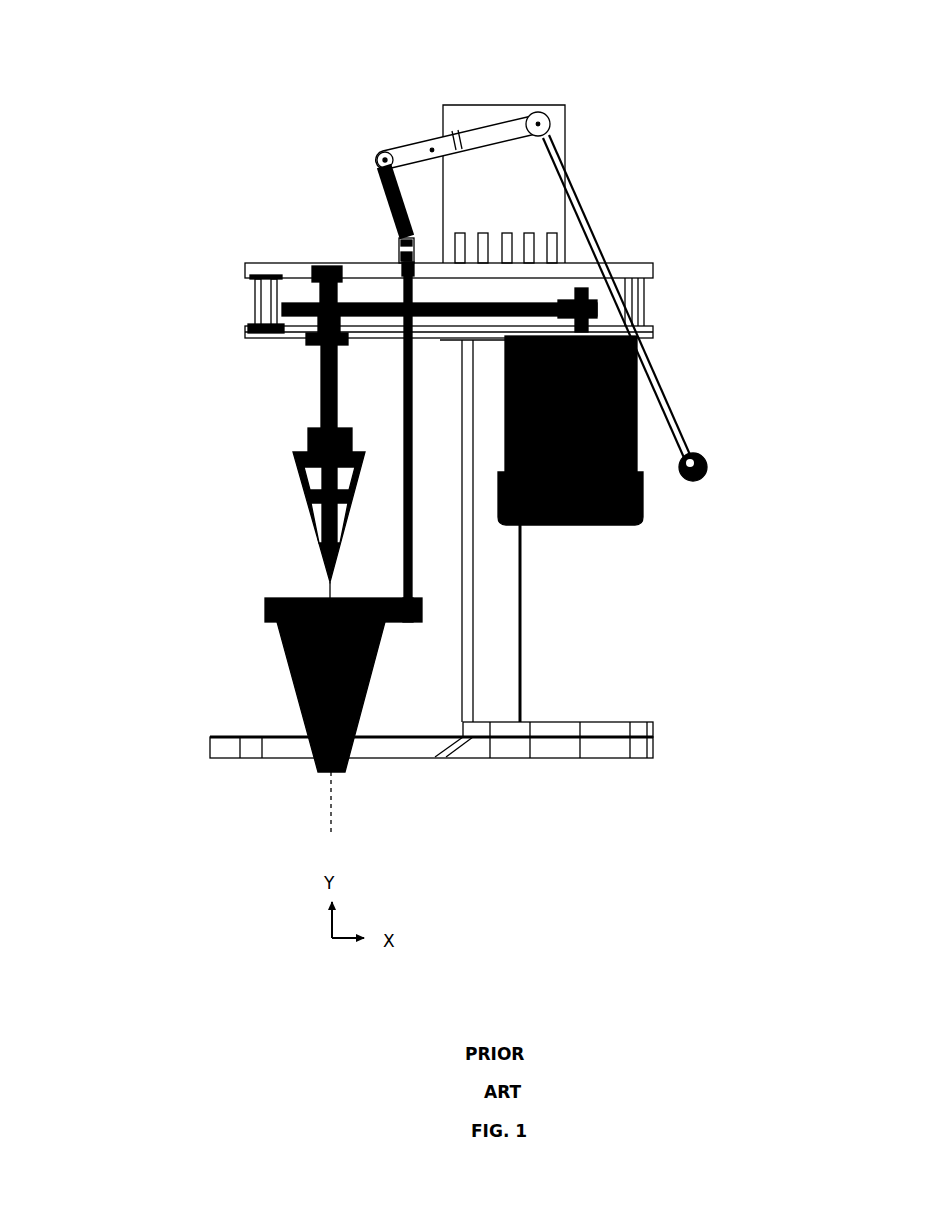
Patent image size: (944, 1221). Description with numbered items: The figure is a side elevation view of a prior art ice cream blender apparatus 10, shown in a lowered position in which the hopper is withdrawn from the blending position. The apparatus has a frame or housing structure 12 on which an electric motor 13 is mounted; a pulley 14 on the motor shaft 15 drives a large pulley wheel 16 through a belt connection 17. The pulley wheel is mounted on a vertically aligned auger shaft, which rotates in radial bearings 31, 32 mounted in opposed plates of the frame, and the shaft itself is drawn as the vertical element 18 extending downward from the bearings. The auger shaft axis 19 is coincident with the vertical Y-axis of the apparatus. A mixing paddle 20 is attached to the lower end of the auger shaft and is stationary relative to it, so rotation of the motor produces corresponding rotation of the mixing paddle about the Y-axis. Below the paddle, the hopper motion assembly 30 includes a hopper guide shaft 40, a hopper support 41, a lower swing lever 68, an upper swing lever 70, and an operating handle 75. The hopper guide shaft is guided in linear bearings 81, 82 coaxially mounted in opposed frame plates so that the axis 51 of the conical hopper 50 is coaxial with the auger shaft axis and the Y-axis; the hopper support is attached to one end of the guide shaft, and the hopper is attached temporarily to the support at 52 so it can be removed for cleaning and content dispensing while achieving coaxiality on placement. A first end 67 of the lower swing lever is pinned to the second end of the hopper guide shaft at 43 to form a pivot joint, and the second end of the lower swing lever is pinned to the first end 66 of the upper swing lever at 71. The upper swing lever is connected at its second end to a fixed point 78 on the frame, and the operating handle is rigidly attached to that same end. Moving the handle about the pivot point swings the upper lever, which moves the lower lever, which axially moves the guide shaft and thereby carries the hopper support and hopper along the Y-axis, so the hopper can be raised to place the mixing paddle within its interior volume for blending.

The ice cream blender apparatus 10 is at (762, 25).
The frame or housing structure 12 is at (657, 262).
The electric motor 13 is at (638, 524).
The pulley 14 is at (580, 290).
The motor shaft 15 is at (615, 322).
The pulley wheel 16 is at (322, 298).
The belt connection 17 is at (485, 303).
The spindle shaft 18 is at (320, 375).
The auger shaft axis 19 is at (328, 582).
The mixing paddle 20 is at (302, 437).
The hopper motion assembly 30 is at (362, 94).
The radial bearing 31 is at (302, 268).
The radial bearing 32 is at (330, 329).
The hopper guide shaft 40 is at (404, 354).
The hopper support 41 is at (421, 640).
The pivot joint 43 is at (400, 240).
The conical hopper 50 is at (283, 658).
The hopper axis 51 is at (339, 823).
The temporary hopper attachment 52 is at (263, 602).
The first end of upper swing lever 66 is at (395, 125).
The first end of lower swing lever 67 is at (404, 268).
The lower swing lever 68 is at (386, 191).
The upper swing lever 70 is at (446, 92).
The pivot joint 71 is at (380, 158).
The operating handle 75 is at (708, 470).
The fixed pivot point 78 is at (539, 123).
The linear bearing 81 is at (330, 268).
The linear bearing 82 is at (318, 343).